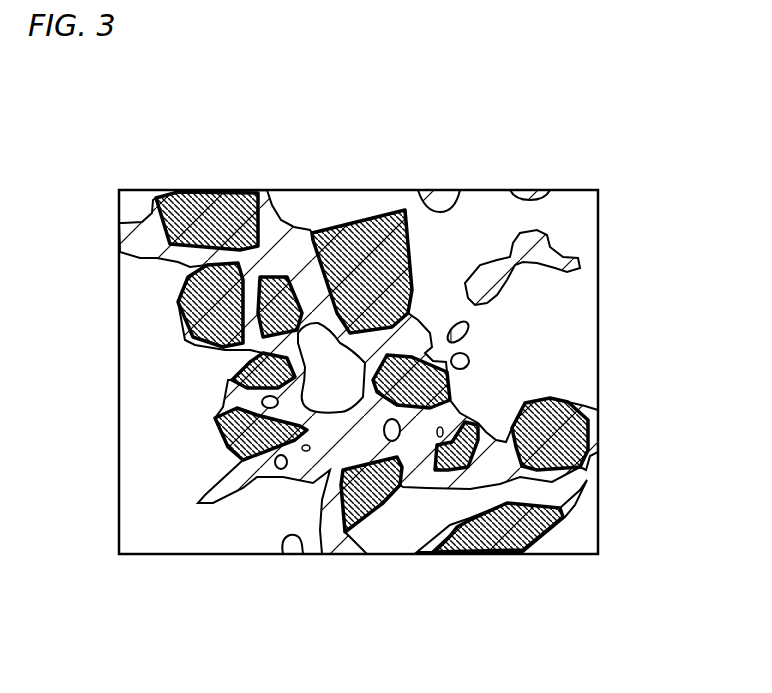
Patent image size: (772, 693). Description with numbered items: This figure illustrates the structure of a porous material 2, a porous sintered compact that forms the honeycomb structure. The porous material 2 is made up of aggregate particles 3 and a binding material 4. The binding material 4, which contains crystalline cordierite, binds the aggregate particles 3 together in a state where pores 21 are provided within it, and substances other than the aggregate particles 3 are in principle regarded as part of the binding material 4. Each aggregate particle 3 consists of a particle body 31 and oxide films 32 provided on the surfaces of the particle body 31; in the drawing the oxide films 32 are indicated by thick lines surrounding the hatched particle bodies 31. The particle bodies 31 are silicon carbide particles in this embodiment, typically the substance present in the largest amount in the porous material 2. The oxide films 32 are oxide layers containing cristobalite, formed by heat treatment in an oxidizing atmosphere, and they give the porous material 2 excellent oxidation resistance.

The porous material 2 is at (218, 129).
The pores 21 is at (148, 399).
The aggregate particles 3 is at (448, 389).
The particle body 31 is at (375, 232).
The oxide films 32 is at (410, 268).
The binding material 4 is at (288, 245).